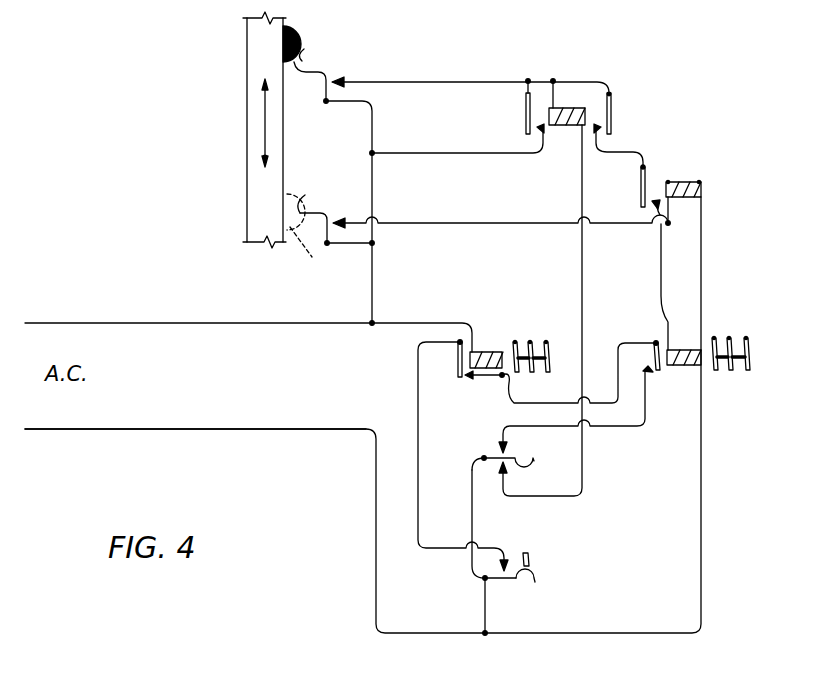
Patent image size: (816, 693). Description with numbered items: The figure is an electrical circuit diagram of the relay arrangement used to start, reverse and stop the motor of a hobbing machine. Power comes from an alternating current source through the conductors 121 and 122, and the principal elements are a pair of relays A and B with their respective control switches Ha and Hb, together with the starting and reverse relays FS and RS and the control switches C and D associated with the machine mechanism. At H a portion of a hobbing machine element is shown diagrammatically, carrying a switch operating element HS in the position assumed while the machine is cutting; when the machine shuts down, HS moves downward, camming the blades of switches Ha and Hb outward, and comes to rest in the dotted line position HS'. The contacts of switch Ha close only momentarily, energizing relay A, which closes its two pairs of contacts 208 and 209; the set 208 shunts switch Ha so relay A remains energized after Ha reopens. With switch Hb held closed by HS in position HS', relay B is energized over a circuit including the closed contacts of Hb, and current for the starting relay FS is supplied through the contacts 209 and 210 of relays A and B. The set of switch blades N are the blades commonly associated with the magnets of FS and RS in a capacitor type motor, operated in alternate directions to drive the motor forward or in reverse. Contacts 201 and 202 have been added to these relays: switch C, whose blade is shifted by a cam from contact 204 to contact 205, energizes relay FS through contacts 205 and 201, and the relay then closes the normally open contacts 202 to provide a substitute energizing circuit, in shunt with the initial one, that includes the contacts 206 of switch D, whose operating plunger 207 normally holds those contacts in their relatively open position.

The A. C. conductor 121 is at (180, 329).
The A. C. conductor 122 is at (172, 433).
The contact of switch Fs 201 is at (651, 363).
The contacts of relay Rs 202 is at (462, 383).
The contact 204 is at (496, 470).
The contact 205 is at (499, 452).
The contacts of switch D 206 is at (496, 574).
The operating plunger 207 is at (531, 558).
The contacts of relay A 208 is at (534, 127).
The contacts of relay A 209 is at (606, 131).
The contacts of relay B 210 is at (654, 193).
The element of the hobbing machine H is at (276, 133).
The switch operating element HS is at (322, 37).
The dotted line position of switch operating element HS' is at (307, 240).
The control switch Ha is at (323, 71).
The control switch Hb is at (331, 201).
The relay A is at (568, 131).
The relay B is at (684, 181).
The control switch C is at (481, 457).
The switch D is at (477, 584).
The set of switch blades N is at (528, 337).
The reverse relay RS is at (560, 373).
The starting relay FS is at (663, 372).